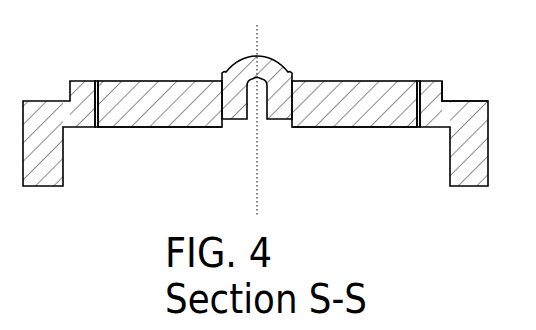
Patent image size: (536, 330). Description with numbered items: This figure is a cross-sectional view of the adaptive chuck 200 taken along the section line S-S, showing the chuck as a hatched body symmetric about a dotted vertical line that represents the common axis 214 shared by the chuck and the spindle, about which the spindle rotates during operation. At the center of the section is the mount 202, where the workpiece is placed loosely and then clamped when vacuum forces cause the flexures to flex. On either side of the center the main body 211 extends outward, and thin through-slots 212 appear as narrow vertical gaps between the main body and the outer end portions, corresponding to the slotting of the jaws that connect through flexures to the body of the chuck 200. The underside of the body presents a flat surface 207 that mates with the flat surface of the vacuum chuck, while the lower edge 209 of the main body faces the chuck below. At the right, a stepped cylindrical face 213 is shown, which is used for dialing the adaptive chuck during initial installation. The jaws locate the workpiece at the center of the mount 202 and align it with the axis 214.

The adaptive chuck 200 is at (83, 81).
The mount 202 is at (153, 102).
The flat surface of the main body of the adaptive chuck 207 is at (77, 128).
The lower surface 209 is at (187, 128).
The main body 211 is at (133, 81).
The through-slot 212 is at (97, 81).
The cylindrical face 213 is at (443, 98).
The common axis 214 is at (257, 178).